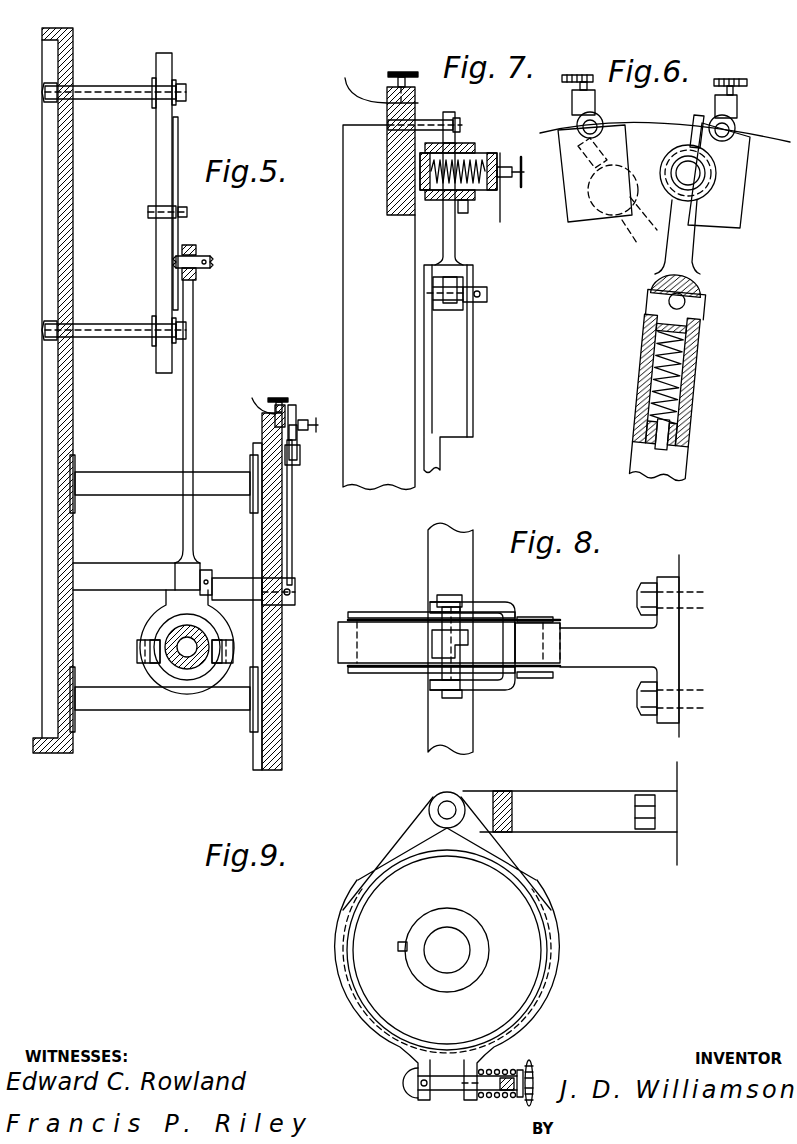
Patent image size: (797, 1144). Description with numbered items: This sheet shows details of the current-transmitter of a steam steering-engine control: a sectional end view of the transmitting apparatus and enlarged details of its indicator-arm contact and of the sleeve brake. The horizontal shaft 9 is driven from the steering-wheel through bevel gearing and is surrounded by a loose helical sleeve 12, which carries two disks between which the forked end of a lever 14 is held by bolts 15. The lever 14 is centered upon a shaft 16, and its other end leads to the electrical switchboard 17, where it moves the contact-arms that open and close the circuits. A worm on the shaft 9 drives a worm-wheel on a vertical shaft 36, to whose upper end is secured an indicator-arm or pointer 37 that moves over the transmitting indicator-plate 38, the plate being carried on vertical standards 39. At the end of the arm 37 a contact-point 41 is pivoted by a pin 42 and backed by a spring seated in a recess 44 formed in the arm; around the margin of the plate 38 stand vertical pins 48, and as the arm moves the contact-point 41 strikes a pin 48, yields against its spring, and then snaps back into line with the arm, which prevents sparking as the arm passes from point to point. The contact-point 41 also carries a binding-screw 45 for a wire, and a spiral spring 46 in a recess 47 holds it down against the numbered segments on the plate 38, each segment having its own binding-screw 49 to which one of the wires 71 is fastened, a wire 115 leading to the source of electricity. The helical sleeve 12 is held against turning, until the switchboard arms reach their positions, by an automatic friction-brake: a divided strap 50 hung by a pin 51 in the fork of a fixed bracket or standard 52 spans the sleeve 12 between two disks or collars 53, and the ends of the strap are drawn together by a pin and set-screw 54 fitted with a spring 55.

In FIG. 5, the horizontal shaft 9 is at (186, 650).
In FIG. 8, the horizontal shaft 9 is at (450, 638).
In FIG. 9, the horizontal shaft 9 is at (447, 950).
In FIG. 5, the loose helical sleeve 12 is at (187, 642).
In FIG. 9, the loose helical sleeve 12 is at (443, 952).
In FIG. 5, the lever 14 is at (189, 543).
In FIG. 5, the bolts 15 is at (137, 648).
In FIG. 5, the shaft 16 is at (193, 579).
In FIG. 5, the electrical switchboard 17 is at (156, 251).
In FIG. 5, the vertical shaft 36 is at (253, 594).
In FIG. 5, the indicator-arm or pointer 37 is at (292, 547).
In FIG. 7, the indicator-arm or pointer 37 is at (448, 369).
In FIG. 6, the indicator-arm or pointer 37 is at (680, 468).
In FIG. 5, the transmitting indicator-plate 38 is at (282, 652).
In FIG. 7, the transmitting indicator-plate 38 is at (379, 288).
In FIG. 5, the vertical standards 39 is at (120, 715).
In FIG. 5, the contact-point 41 is at (297, 448).
In FIG. 7, the contact-point 41 is at (442, 204).
In FIG. 6, the contact-point 41 is at (691, 247).
In FIG. 5, the pin 42 is at (300, 462).
In FIG. 7, the pin 42 is at (487, 295).
In FIG. 6, the pin 42 is at (686, 300).
In FIG. 6, the recess 44 is at (698, 382).
In FIG. 5, the binding-screw 45 is at (307, 432).
In FIG. 7, the binding-screw 45 is at (522, 172).
In FIG. 7, the spiral spring 46 is at (468, 160).
In FIG. 7, the recess 47 is at (465, 210).
In FIG. 5, the vertical pins 48 is at (275, 424).
In FIG. 7, the vertical pins 48 is at (428, 128).
In FIG. 6, the vertical pins 48 is at (596, 126).
In FIG. 5, the binding-screw 49 is at (278, 394).
In FIG. 7, the binding-screw 49 is at (402, 75).
In FIG. 6, the binding-screw 49 is at (657, 85).
In FIG. 9, the divided strap 50 is at (520, 1031).
In FIG. 8, the pin 51 is at (457, 694).
In FIG. 9, the pin 51 is at (447, 801).
In FIG. 8, the fixed bracket or standard 52 is at (633, 646).
In FIG. 9, the fixed bracket or standard 52 is at (570, 813).
In FIG. 8, the disks or collars 53 is at (489, 646).
In FIG. 9, the pin and set-screw 54 is at (452, 1087).
In FIG. 9, the spring 55 is at (506, 1091).
In FIG. 5, the wires 71 is at (253, 397).
In FIG. 7, the wires 71 is at (372, 81).
In FIG. 7, the wire 115 is at (501, 207).